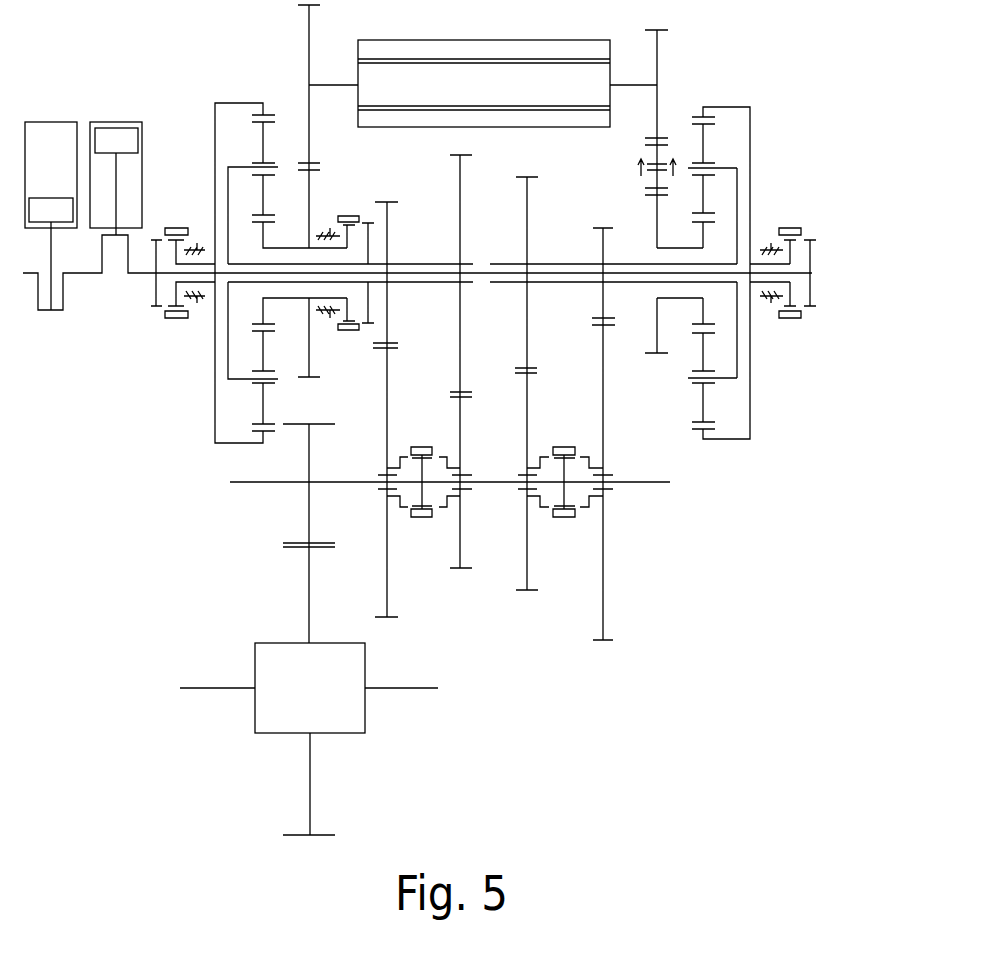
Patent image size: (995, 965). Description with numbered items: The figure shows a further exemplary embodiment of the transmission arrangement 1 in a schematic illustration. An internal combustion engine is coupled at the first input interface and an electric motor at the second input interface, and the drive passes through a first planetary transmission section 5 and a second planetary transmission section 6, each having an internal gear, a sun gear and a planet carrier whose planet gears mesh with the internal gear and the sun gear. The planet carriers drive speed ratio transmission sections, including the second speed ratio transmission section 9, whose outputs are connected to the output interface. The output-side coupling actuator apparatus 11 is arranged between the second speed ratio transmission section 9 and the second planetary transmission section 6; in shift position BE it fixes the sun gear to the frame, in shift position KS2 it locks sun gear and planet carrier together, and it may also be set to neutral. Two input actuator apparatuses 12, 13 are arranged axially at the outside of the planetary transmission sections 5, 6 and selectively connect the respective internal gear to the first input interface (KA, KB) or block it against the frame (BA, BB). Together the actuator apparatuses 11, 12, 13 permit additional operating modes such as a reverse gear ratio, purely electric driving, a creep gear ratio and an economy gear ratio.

The transmission arrangement 1 is at (813, 88).
The first planetary transmission section 5 is at (725, 90).
The second planetary transmission section 6 is at (228, 92).
The second speed ratio transmission section 9 is at (462, 622).
The output-side coupling actuator apparatus 11 is at (372, 179).
The input actuator apparatus 12 is at (792, 192).
The input actuator apparatus 13 is at (180, 208).